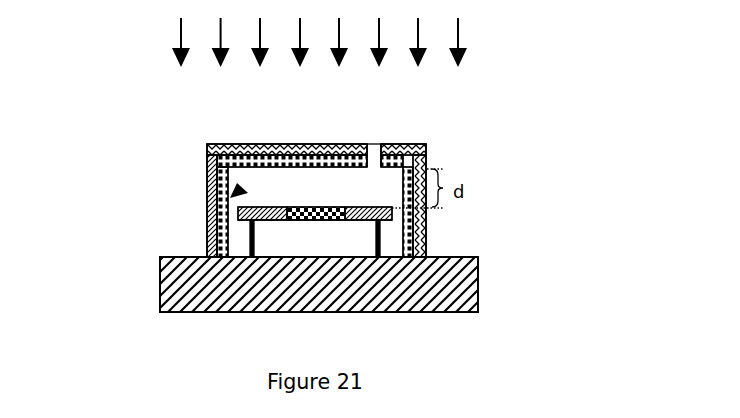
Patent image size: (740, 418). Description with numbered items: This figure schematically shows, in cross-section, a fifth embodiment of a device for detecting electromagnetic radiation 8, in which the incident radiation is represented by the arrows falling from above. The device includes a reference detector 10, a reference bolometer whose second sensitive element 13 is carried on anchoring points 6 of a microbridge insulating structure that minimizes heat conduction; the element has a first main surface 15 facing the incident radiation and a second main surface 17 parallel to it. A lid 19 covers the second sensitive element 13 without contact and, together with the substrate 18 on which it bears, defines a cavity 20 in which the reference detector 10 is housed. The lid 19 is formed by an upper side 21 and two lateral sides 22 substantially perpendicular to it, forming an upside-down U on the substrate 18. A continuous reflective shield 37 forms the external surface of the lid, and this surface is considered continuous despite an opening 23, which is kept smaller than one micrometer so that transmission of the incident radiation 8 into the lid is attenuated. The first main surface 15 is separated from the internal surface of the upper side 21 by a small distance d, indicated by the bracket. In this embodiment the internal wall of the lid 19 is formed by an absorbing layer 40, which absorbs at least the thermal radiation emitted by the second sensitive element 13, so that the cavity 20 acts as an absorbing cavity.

The electromagnetic radiation 8 is at (460, 35).
The upper side 21 is at (243, 143).
The absorbing layer 40 is at (207, 152).
The reference detector 10 is at (207, 181).
The lateral sides 22 is at (205, 210).
The anchoring points 6 is at (250, 233).
The second main surface 17 is at (250, 244).
The first main surface 15 is at (308, 207).
The second sensitive element 13 is at (327, 207).
The opening 23 is at (372, 150).
The continuous reflective shield 37 is at (427, 144).
The lid 19 is at (483, 162).
The cavity 20 is at (392, 238).
The substrate 18 is at (453, 283).